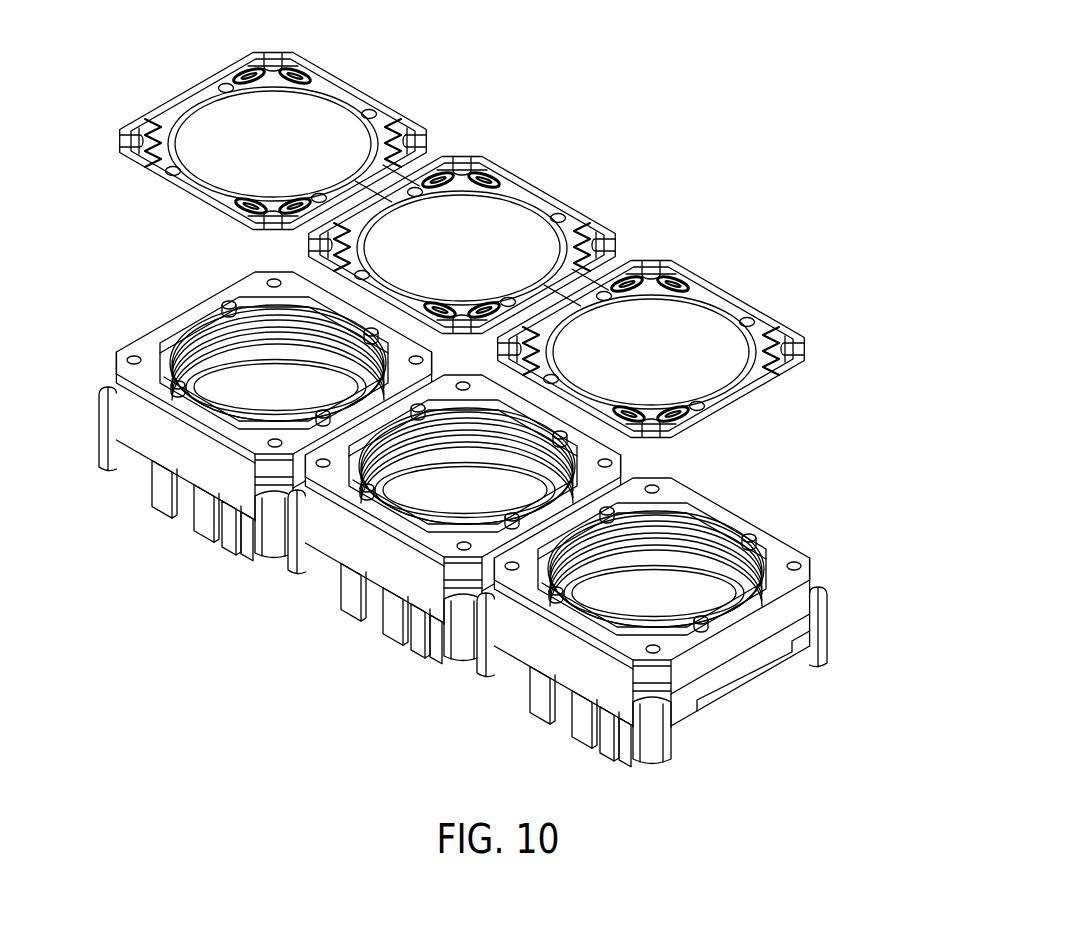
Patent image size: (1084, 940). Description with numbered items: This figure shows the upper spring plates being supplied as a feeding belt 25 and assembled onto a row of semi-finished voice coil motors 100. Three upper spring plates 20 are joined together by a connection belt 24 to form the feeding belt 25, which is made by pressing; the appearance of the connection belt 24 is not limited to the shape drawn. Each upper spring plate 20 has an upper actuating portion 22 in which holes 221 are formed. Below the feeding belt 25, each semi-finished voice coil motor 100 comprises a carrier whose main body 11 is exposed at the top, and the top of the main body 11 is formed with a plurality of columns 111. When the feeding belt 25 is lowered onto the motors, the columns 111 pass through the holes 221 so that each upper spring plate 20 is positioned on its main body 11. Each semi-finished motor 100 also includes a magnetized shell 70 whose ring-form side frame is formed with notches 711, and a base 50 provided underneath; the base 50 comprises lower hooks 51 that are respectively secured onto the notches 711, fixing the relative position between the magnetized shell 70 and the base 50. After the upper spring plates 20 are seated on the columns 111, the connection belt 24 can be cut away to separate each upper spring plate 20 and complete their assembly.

The upper spring plate 20 is at (273, 115).
The upper actuating portion 22 is at (200, 104).
The holes 221 is at (225, 83).
The connection belt 24 is at (402, 175).
The feeding belt 25 is at (558, 171).
The magnetized shell 70 is at (268, 414).
The columns 111 is at (226, 298).
The main body 11 is at (273, 358).
The base 50 is at (127, 465).
The notches 711 is at (258, 486).
The lower hooks 51 is at (276, 505).
The semi-finished voice coil motor 100 is at (457, 490).